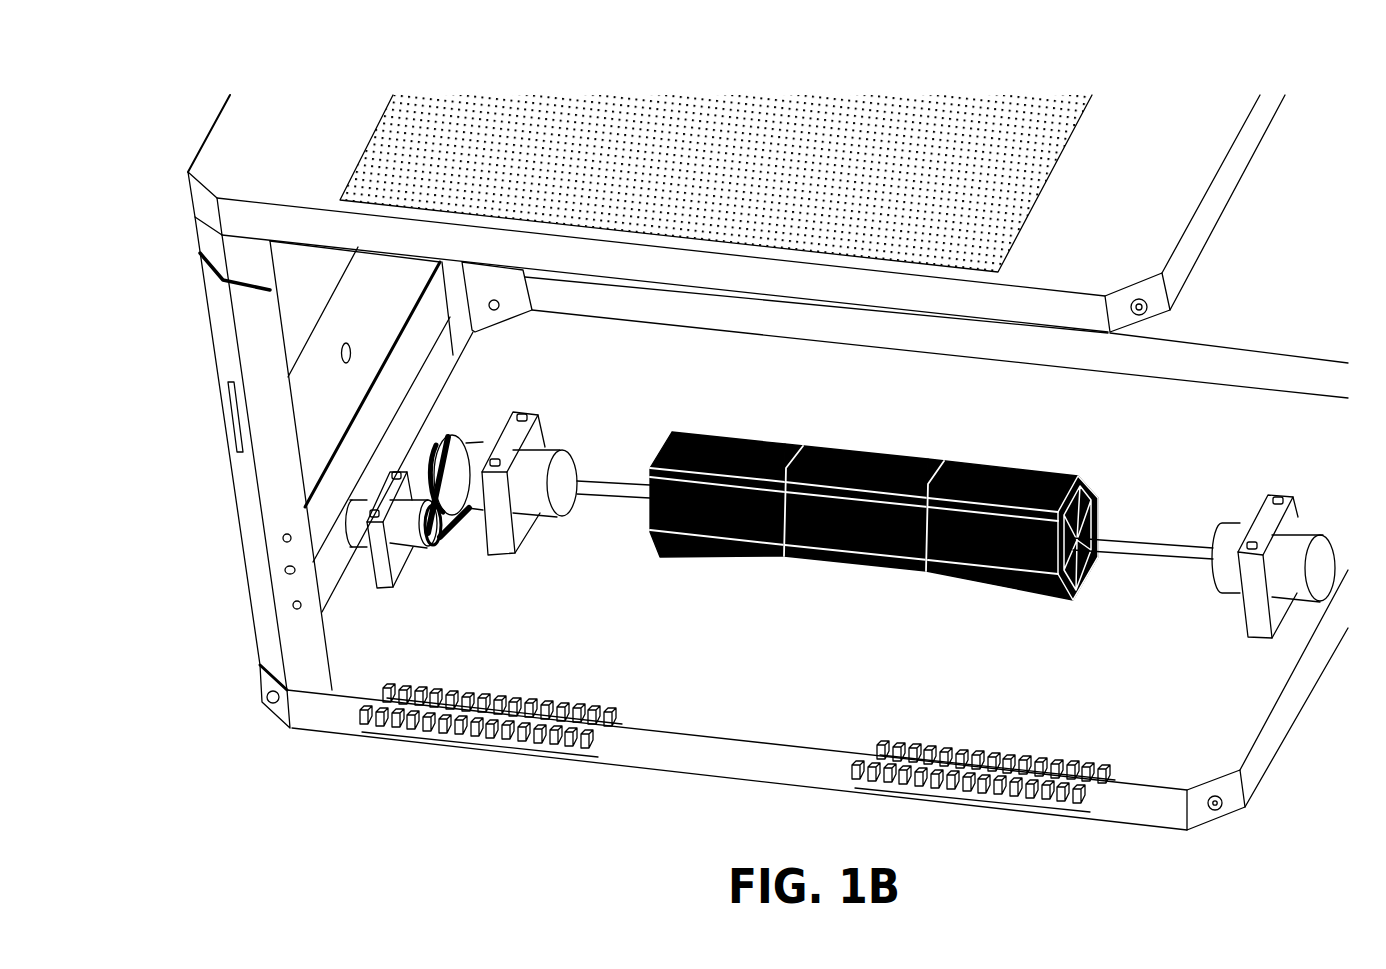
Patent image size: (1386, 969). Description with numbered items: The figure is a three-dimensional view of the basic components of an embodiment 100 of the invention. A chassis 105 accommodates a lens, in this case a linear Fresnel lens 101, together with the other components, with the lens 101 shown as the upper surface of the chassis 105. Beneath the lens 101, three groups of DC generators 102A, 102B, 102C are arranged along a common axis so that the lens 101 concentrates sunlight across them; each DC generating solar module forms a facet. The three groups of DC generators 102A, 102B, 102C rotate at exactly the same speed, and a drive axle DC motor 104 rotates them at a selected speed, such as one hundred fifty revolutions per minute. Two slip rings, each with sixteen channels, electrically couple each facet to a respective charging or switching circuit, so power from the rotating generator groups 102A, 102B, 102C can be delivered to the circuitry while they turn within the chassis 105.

The embodiment 100 is at (252, 801).
The linear Fresnel lens 101 is at (1003, 168).
The group of DC generators 102A is at (718, 527).
The group of DC generators 102B is at (856, 541).
The group of DC generators 102C is at (1012, 554).
The drive axle DC motor 104 is at (447, 537).
The chassis 105 is at (215, 148).